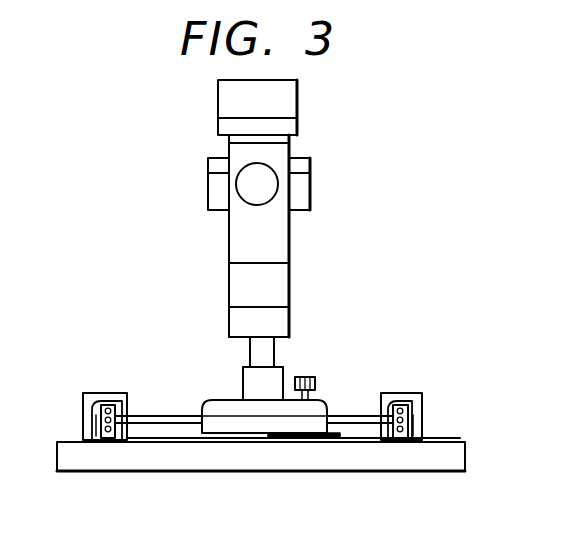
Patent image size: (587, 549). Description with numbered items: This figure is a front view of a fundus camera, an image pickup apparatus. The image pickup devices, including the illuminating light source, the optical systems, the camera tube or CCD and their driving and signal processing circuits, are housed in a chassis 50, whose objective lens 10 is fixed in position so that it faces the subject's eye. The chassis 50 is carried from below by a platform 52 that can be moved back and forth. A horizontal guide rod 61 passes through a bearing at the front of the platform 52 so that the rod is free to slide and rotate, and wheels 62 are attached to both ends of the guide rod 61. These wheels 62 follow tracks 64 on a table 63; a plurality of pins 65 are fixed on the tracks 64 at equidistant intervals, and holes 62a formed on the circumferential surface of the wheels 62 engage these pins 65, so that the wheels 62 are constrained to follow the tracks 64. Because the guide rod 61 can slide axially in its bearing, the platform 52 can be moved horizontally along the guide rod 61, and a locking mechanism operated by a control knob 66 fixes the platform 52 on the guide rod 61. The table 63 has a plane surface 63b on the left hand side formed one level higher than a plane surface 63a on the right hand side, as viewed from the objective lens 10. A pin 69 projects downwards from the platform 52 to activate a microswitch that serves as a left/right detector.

The objective lens 10 is at (292, 172).
The chassis 50 is at (272, 235).
The platform 52 is at (213, 408).
The horizontal guide rod 61 is at (347, 415).
The wheels 62 is at (105, 418).
The holes 62a is at (99, 397).
The table 63 is at (362, 463).
The plane surface 63a is at (237, 443).
The plane surface 63b is at (298, 443).
The tracks 64 is at (112, 440).
The pins 65 is at (97, 435).
The control knob 66 is at (302, 376).
The pin 69 is at (252, 432).